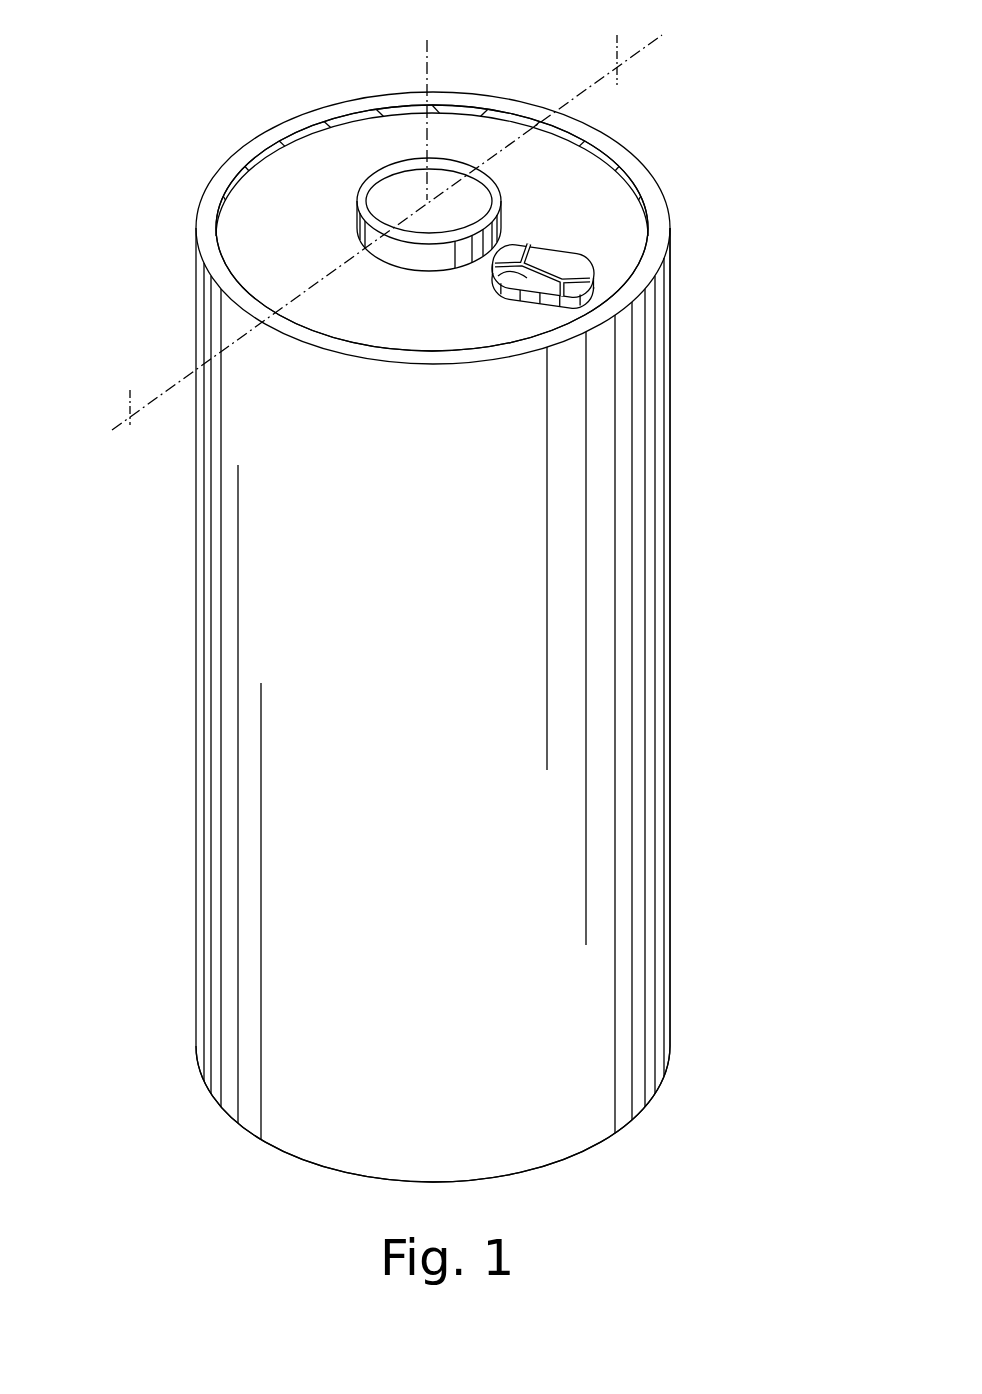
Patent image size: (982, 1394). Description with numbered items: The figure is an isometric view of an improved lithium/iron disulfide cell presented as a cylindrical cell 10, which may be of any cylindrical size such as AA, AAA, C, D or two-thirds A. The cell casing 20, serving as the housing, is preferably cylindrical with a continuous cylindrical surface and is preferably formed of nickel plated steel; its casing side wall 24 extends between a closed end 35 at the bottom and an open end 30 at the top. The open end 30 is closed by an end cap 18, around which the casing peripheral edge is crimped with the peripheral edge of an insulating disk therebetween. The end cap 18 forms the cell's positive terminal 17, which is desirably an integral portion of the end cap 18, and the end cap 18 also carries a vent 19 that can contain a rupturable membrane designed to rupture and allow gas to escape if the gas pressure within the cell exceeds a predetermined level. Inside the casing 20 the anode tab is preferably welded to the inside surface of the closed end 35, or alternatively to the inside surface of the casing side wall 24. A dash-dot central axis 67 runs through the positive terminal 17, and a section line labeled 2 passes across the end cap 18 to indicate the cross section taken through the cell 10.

The cylindrical cell 10 is at (431, 647).
The positive terminal 17 is at (384, 168).
The end cap 18 is at (628, 228).
The vent 19 is at (490, 281).
The cell casing 20 is at (674, 508).
The casing side wall 24 is at (671, 425).
The open end 30 is at (607, 183).
The closed end 35 is at (272, 1150).
The central axis 67 is at (432, 74).
The section line 2- 2 is at (95, 397).